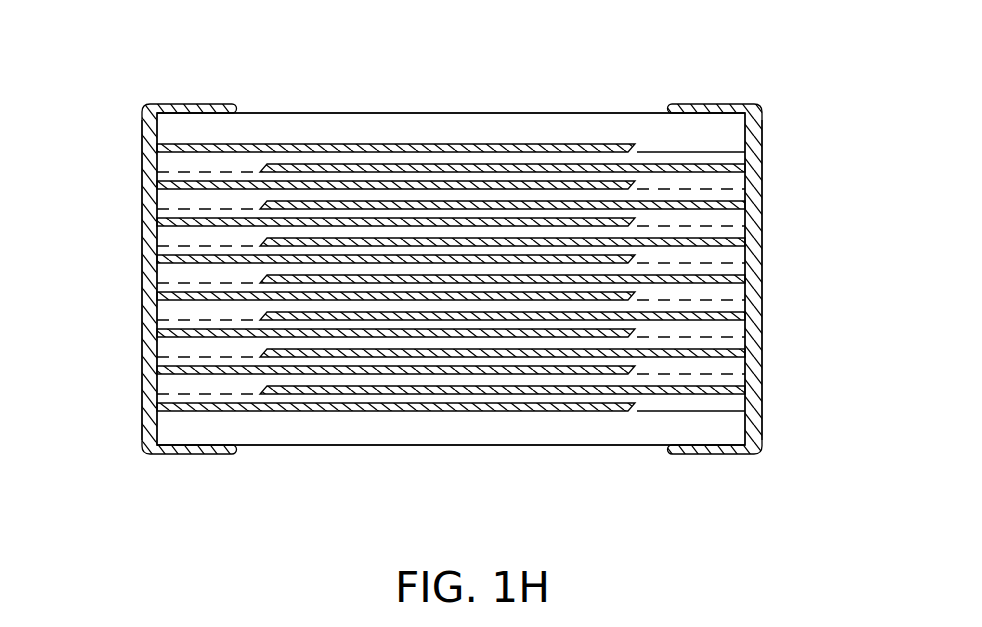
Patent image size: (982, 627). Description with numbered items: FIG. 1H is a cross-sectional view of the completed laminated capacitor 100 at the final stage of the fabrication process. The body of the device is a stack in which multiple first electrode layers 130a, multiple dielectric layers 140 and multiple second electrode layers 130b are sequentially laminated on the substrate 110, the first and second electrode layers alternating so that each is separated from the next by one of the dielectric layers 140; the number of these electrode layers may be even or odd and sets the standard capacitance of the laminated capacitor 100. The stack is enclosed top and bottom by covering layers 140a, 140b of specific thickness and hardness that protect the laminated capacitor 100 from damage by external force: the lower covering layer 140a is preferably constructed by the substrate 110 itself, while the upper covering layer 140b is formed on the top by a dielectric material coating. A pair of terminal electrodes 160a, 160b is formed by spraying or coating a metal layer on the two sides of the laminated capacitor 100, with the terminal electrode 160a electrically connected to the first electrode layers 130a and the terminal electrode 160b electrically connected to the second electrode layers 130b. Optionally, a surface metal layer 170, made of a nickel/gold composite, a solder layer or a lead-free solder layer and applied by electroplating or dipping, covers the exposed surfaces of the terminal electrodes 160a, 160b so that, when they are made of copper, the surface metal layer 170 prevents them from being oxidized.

The laminated capacitor 100 is at (451, 288).
The substrate 110 is at (492, 428).
The first electrode layers 130a is at (153, 150).
The second electrode layers 130b is at (763, 210).
The dielectric layers 140 is at (718, 372).
The covering layer 140a is at (451, 469).
The covering layer 140b is at (495, 128).
The terminal electrode 160a is at (147, 326).
The terminal electrode 160b is at (757, 323).
The surface metal layer 170 is at (142, 388).